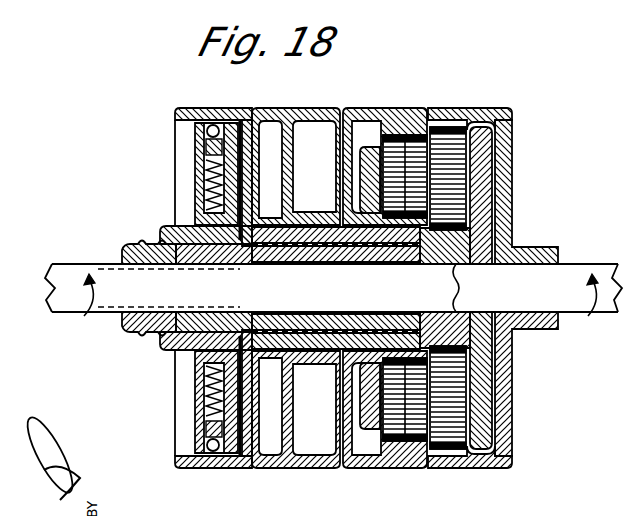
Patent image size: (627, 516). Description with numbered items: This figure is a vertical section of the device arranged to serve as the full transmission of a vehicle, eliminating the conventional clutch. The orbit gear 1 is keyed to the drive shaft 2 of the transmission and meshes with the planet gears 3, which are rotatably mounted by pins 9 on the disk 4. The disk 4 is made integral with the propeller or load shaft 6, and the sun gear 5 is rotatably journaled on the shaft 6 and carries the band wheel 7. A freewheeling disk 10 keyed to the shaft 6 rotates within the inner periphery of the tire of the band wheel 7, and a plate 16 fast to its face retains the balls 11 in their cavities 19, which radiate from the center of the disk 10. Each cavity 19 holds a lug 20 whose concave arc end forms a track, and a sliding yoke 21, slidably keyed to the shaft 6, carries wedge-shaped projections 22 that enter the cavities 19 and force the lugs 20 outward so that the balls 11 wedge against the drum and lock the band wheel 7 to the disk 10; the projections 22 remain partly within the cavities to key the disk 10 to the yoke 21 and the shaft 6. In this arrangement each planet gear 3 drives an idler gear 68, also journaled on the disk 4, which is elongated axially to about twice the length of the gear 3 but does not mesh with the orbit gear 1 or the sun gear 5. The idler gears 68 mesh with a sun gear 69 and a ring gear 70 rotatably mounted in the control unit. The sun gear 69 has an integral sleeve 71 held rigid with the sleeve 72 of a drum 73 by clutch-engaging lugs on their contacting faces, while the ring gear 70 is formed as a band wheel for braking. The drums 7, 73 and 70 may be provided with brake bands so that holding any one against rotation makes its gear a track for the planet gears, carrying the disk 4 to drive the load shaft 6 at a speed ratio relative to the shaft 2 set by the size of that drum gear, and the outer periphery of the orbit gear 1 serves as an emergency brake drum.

The orbit gear 1 is at (510, 123).
The shaft 2 is at (333, 290).
The idler gear 3 is at (455, 130).
The disk 4 is at (493, 192).
The sun gear 5 is at (497, 226).
The load shaft 6 is at (336, 288).
The band wheel 7 is at (243, 108).
The pins 9 is at (414, 135).
The freewheeling disk 10 is at (206, 445).
The balls 11 is at (213, 108).
The plate 16 is at (206, 131).
The cavities 19 is at (200, 223).
The lug 20 is at (213, 180).
The sliding yoke 21 is at (128, 336).
The projections 22 is at (167, 346).
The idler gear 68 is at (398, 165).
The sun gear 69 is at (408, 265).
The ring gear 70 is at (424, 130).
The sleeve 71 is at (371, 265).
The sleeve 72 is at (292, 265).
The drum 73 is at (310, 108).